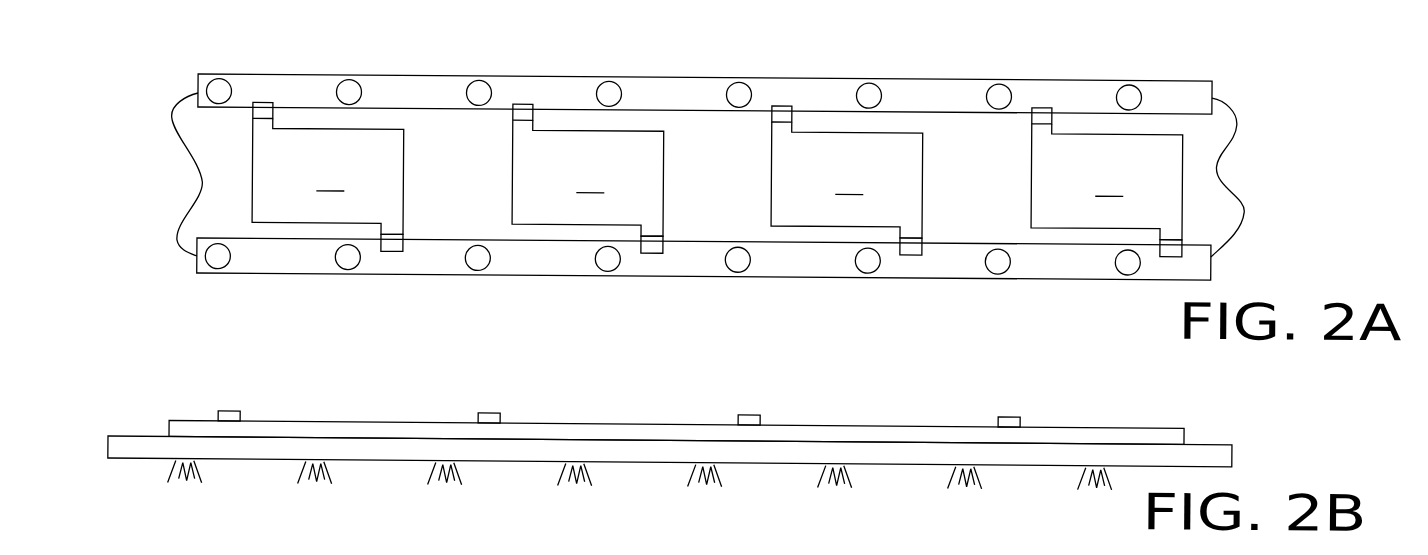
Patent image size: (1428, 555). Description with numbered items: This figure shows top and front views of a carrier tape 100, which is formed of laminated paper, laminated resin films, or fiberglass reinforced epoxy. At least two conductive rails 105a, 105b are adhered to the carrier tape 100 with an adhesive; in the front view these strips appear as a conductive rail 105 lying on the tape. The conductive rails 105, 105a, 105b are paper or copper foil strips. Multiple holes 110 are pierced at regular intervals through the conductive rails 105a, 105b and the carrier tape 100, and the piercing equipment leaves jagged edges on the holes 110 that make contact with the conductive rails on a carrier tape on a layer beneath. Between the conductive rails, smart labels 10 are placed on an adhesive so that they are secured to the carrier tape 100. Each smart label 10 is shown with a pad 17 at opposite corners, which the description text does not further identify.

In FIG. 2A, the smart label 10 is at (717, 178).
In FIG. 2A, the die pad / bond pad 17 is at (252, 122).
In FIG. 2B, the die pad / bond pad 17 is at (230, 408).
In FIG. 2A, the carrier tape 100 is at (203, 183).
In FIG. 2B, the carrier tape 100 is at (123, 435).
In FIG. 2B, the conductive rail 105 is at (190, 419).
In FIG. 2A, the first conductive rail 105a is at (285, 73).
In FIG. 2A, the second conductive rail 105b is at (285, 274).
In FIG. 2A, the hole 110 is at (218, 75).
In FIG. 2B, the hole 110 is at (303, 481).